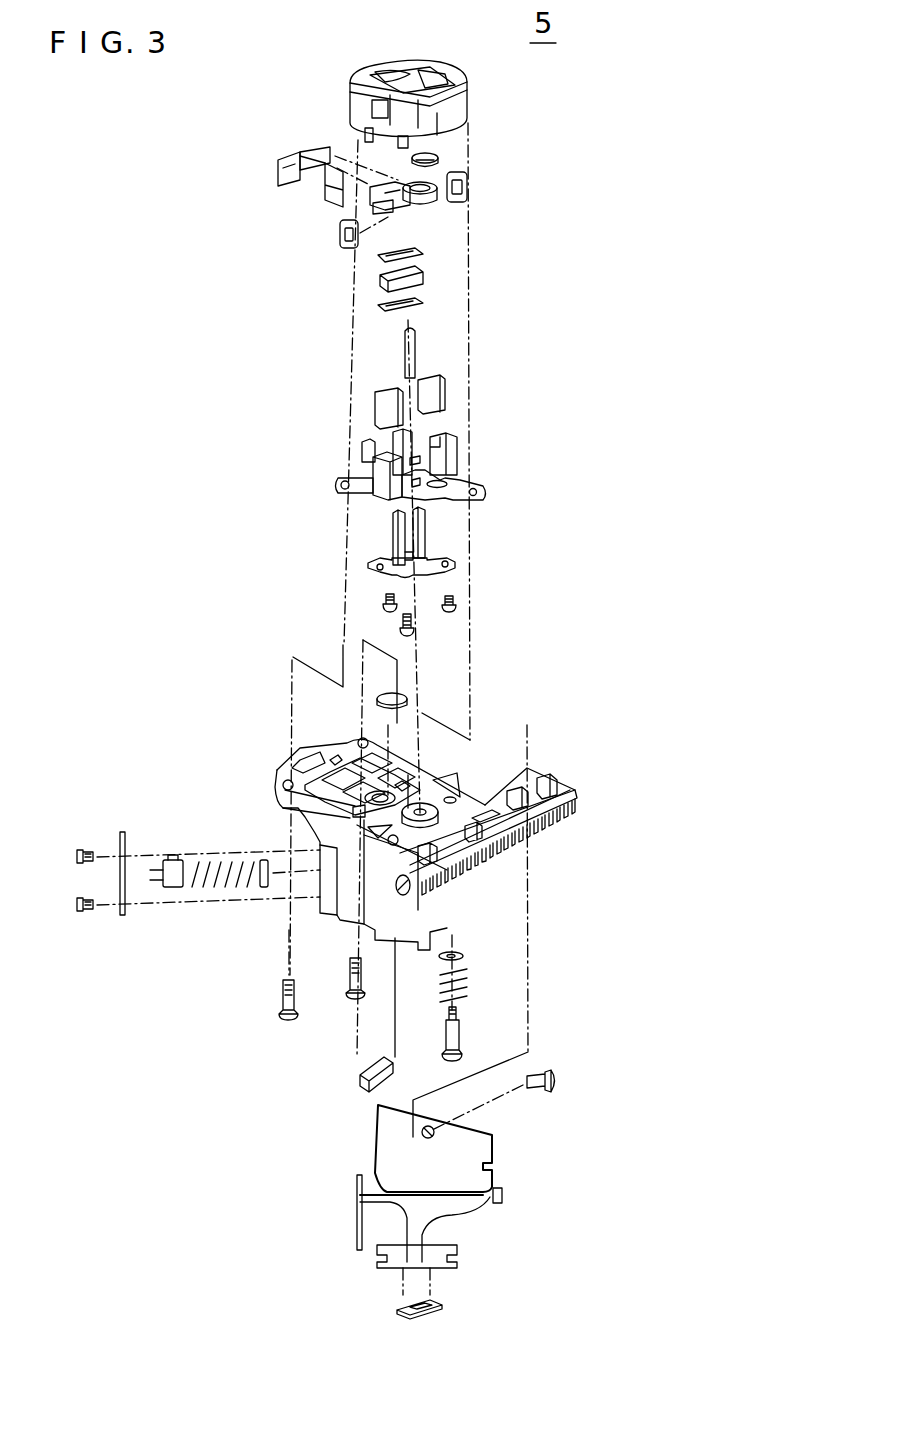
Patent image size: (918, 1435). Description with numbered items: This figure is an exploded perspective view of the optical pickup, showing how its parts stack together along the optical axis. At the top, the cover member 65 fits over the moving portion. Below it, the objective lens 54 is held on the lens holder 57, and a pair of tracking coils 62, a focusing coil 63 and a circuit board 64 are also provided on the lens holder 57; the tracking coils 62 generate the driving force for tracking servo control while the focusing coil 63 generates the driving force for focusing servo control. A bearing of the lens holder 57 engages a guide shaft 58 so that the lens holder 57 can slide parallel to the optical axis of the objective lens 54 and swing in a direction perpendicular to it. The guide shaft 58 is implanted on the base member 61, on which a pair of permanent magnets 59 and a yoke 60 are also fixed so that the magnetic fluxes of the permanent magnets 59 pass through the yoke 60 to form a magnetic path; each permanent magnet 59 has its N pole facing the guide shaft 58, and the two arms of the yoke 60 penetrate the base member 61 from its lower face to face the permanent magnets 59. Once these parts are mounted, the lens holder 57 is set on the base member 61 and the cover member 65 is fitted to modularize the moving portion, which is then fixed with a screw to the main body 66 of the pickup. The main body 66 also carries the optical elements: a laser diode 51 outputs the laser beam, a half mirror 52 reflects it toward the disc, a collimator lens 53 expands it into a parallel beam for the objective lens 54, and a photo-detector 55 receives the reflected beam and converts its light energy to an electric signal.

The laser diode 51 is at (176, 858).
The half mirror 52 is at (365, 1090).
The collimator lens 53 is at (410, 696).
The objective lens 54 is at (440, 153).
The photo-detector 55 is at (436, 1312).
The lens holder 57 is at (438, 204).
The guide shaft 58 is at (402, 348).
The permanent magnets 59 is at (374, 414).
The yoke 60 is at (425, 548).
The base member 61 is at (378, 492).
The tracking coils 62 is at (468, 180).
The focusing coil 63 is at (378, 285).
The circuit board 64 is at (280, 180).
The cover member 65 is at (360, 100).
The main body 66 is at (450, 780).